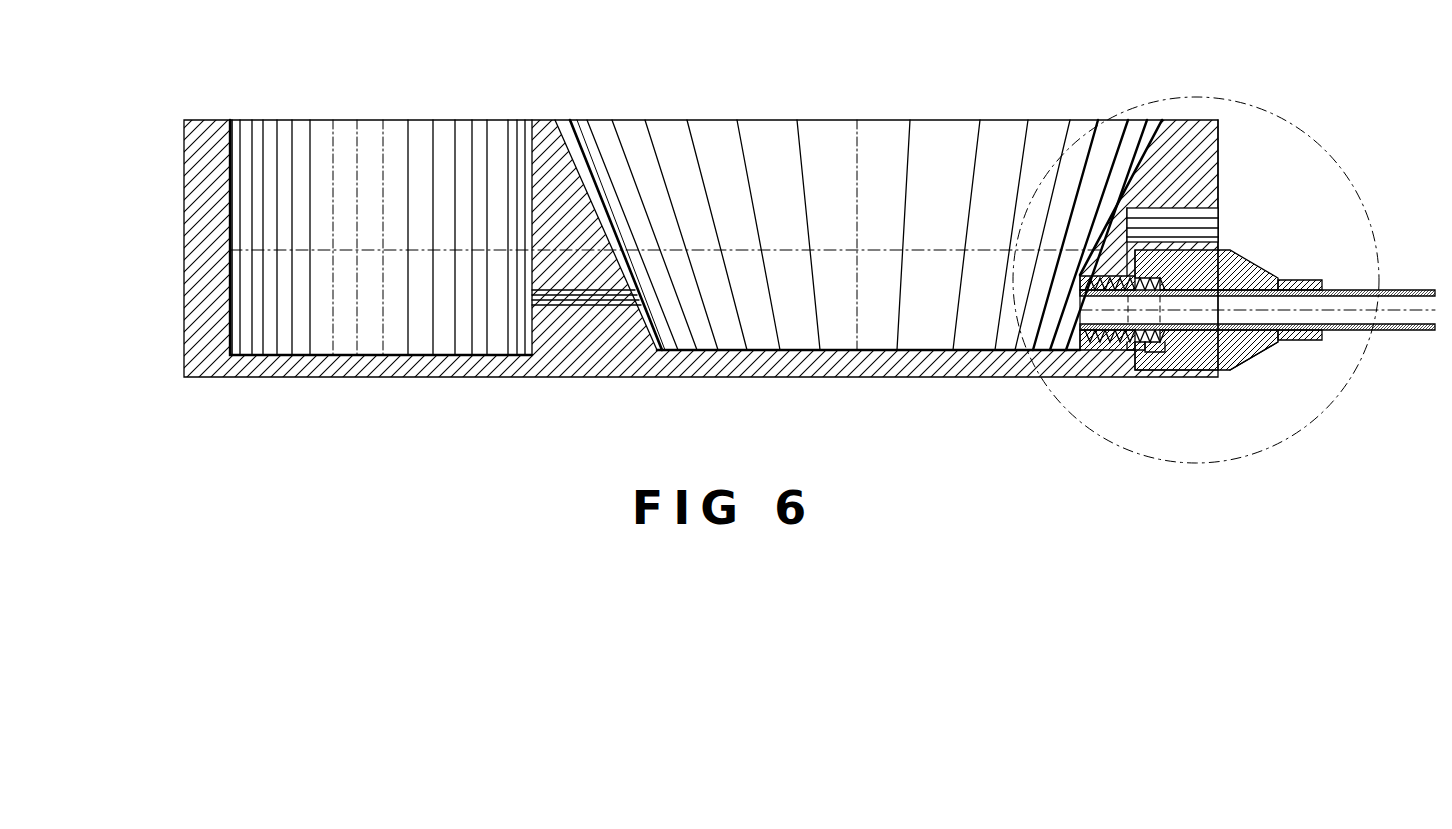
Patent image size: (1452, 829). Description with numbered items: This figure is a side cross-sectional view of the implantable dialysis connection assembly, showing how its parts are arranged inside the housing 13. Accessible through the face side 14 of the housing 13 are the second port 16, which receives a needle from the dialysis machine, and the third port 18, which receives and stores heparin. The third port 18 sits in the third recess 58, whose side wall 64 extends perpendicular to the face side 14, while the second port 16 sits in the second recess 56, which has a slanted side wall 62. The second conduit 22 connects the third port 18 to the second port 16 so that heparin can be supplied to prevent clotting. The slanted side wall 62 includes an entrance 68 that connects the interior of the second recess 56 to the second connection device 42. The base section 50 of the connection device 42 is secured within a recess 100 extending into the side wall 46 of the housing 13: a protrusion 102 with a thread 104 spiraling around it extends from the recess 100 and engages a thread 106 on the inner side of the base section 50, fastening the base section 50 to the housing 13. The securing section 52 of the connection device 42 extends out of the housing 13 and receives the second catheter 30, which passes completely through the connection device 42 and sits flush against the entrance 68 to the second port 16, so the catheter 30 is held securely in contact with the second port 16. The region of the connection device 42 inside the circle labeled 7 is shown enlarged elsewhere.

The housing 13 is at (348, 381).
The third port 18 is at (367, 140).
The side wall of the third recess 64 is at (229, 177).
The third recess 58 is at (307, 114).
The face side 14 is at (543, 120).
The second recess 56 is at (664, 113).
The second port 16 is at (892, 142).
The second conduit 22 is at (583, 312).
The circle 7 is at (1144, 96).
The slanted side wall of the second recess 62 is at (1147, 153).
The side wall of the housing 46 is at (1218, 163).
The recess 100 is at (1218, 226).
The base section 50 is at (1232, 255).
The securing section 52 is at (1282, 279).
The second catheter 30 is at (1406, 297).
The entrance 68 is at (1073, 320).
The thread 104 is at (1128, 335).
The protrusion 102 is at (1133, 336).
The thread 106 is at (1146, 340).
The second connection device 42 is at (1322, 361).